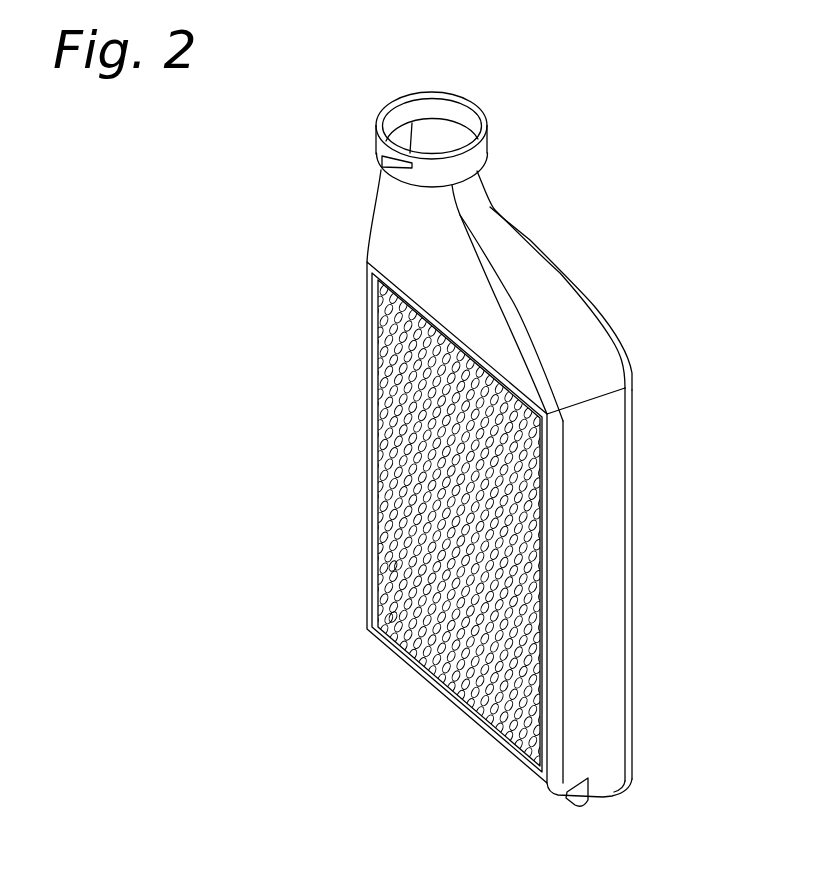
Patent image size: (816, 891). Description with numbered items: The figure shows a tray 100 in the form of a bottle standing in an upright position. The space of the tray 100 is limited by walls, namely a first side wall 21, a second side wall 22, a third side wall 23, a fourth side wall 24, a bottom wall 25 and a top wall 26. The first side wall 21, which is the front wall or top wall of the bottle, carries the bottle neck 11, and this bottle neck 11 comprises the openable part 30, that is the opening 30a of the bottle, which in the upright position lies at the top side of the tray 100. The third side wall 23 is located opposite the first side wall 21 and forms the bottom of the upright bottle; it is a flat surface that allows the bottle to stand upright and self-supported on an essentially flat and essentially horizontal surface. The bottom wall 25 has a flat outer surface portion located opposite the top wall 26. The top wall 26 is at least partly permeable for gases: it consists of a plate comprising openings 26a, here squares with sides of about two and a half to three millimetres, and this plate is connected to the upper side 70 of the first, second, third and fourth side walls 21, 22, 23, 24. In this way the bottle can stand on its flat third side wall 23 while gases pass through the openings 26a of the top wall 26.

The tray 100 is at (204, 240).
The openable part 30 is at (347, 68).
The opening 30a is at (438, 111).
The bottle neck 11 is at (493, 194).
The first side wall 21 is at (573, 335).
The second side wall 22 is at (595, 510).
The bottom wall 25 is at (638, 579).
The third side wall 23 is at (605, 797).
The fourth side wall 24 is at (356, 328).
The upper side 70 is at (380, 437).
The top wall 26 is at (407, 497).
The openings 26a is at (393, 568).